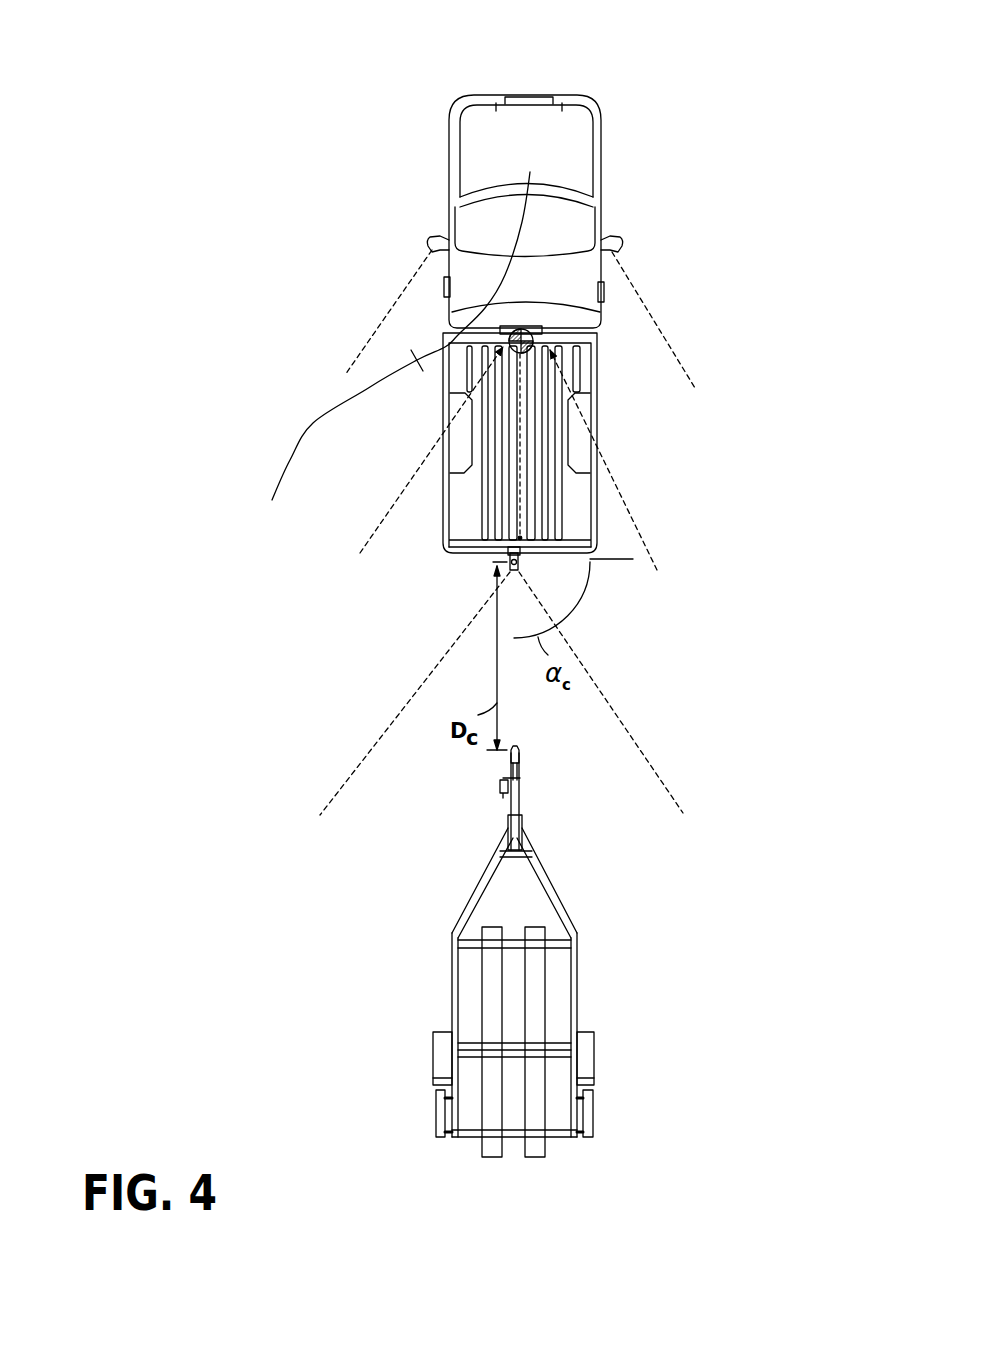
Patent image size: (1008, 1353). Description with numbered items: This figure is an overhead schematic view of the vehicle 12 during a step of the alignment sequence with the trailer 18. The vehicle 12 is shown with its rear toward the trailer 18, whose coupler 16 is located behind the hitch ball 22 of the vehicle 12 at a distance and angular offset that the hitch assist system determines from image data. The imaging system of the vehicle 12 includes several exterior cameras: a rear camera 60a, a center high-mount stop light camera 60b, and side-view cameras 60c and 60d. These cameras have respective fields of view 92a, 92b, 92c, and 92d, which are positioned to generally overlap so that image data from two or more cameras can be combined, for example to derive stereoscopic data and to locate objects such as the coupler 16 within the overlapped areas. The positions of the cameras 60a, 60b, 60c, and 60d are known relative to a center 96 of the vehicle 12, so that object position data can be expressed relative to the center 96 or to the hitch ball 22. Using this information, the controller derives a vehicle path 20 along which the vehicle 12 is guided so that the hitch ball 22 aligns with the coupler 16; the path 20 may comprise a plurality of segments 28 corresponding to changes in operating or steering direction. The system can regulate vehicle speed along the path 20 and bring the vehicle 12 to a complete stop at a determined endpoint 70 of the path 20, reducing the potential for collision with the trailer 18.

The vehicle 12 is at (606, 60).
The coupler 16 is at (520, 752).
The trailer 18 is at (460, 902).
The vehicle path 20 is at (527, 460).
The hitch ball 22 is at (509, 561).
The segments 28 is at (447, 309).
The rear camera 60a is at (516, 552).
The center high-mount stop light (CHMSL) camera 60b is at (521, 327).
The side-view camera 60c is at (614, 255).
The side-view camera 60d is at (430, 258).
The endpoint 70 is at (462, 537).
The field of view 92a is at (432, 672).
The field of view 92b is at (366, 538).
The field of view 92c is at (672, 346).
The field of view 92d is at (355, 358).
The center 96 is at (535, 335).